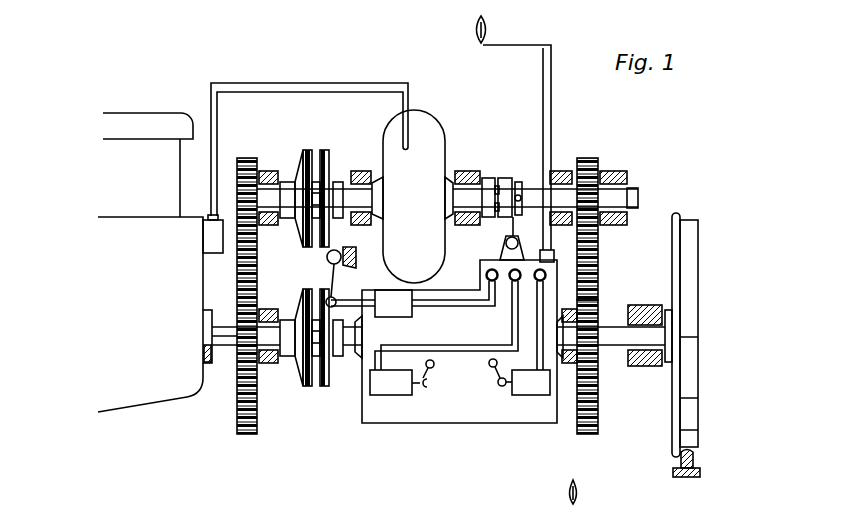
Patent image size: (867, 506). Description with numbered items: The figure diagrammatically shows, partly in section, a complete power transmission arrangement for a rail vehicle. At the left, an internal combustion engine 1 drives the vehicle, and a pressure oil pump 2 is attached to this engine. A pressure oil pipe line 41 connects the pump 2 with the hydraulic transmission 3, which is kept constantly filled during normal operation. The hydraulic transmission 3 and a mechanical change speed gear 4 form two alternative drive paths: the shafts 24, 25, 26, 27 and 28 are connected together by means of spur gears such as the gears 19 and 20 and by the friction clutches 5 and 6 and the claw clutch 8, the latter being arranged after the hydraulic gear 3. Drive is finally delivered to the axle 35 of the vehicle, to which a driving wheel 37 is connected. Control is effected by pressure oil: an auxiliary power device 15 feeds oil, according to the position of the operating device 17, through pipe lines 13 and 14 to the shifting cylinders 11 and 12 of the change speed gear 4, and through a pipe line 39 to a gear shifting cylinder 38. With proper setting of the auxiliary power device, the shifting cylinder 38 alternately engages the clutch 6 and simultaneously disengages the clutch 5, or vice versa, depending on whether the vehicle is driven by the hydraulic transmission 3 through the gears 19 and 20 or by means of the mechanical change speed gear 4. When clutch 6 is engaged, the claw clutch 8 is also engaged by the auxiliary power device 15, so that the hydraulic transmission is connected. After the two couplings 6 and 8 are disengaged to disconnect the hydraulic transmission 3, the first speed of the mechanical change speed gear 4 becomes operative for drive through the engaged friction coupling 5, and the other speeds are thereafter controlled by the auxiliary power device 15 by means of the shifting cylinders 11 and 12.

The internal combustion engine 1 is at (138, 125).
The pressure oil pump 2 is at (215, 243).
The hydraulic transmission 3 is at (419, 142).
The mechanical change speed gear 4 is at (373, 408).
The friction clutch 5 is at (300, 297).
The friction clutch 6 is at (299, 167).
The claw clutch 8 is at (488, 177).
The shifting cylinder 11 is at (398, 398).
The shifting cylinder 12 is at (526, 398).
The pipe line 13 is at (417, 346).
The pipe line 14 is at (538, 320).
The auxiliary power device 15 is at (599, 263).
The operating device 17 is at (507, 46).
The spur gear 19 is at (252, 292).
The spur gear 20 is at (597, 395).
The shaft 24 is at (223, 352).
The shaft 25 is at (270, 198).
The shaft 26 is at (359, 196).
The shaft 27 is at (560, 197).
The shaft 28 is at (347, 357).
The axle 35 is at (612, 330).
The driving wheel 37 is at (688, 287).
The gear shifting cylinder 38 is at (383, 300).
The pipe line 39 is at (450, 301).
The pressure oil pipe line 41 is at (298, 84).